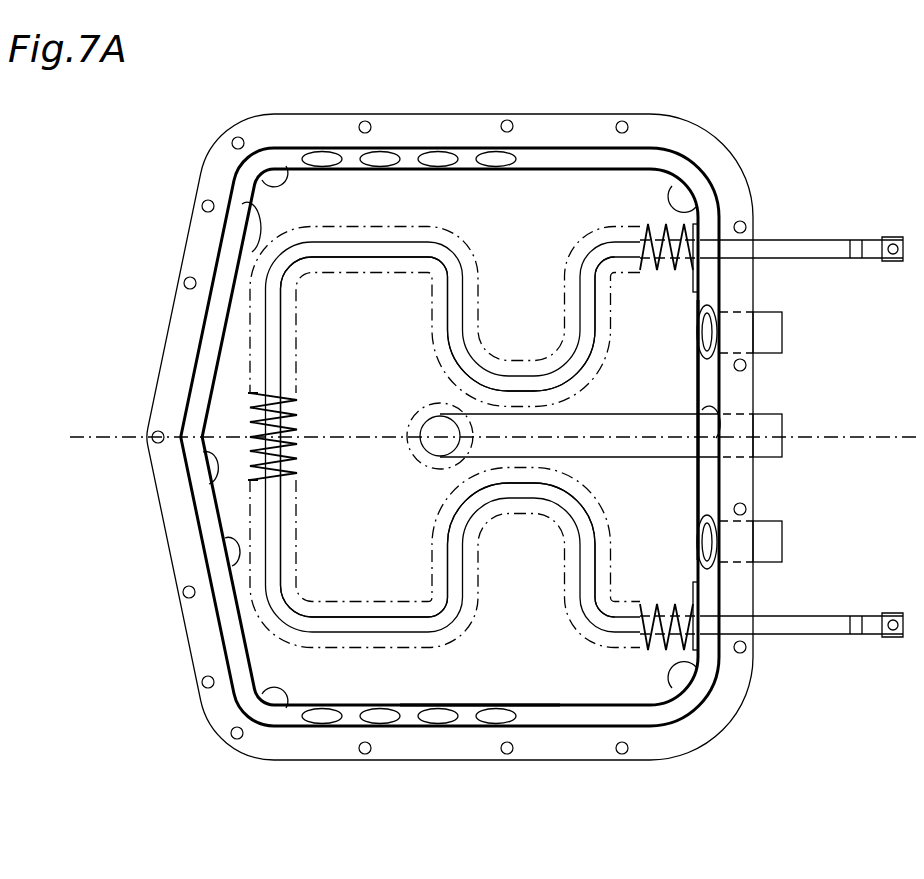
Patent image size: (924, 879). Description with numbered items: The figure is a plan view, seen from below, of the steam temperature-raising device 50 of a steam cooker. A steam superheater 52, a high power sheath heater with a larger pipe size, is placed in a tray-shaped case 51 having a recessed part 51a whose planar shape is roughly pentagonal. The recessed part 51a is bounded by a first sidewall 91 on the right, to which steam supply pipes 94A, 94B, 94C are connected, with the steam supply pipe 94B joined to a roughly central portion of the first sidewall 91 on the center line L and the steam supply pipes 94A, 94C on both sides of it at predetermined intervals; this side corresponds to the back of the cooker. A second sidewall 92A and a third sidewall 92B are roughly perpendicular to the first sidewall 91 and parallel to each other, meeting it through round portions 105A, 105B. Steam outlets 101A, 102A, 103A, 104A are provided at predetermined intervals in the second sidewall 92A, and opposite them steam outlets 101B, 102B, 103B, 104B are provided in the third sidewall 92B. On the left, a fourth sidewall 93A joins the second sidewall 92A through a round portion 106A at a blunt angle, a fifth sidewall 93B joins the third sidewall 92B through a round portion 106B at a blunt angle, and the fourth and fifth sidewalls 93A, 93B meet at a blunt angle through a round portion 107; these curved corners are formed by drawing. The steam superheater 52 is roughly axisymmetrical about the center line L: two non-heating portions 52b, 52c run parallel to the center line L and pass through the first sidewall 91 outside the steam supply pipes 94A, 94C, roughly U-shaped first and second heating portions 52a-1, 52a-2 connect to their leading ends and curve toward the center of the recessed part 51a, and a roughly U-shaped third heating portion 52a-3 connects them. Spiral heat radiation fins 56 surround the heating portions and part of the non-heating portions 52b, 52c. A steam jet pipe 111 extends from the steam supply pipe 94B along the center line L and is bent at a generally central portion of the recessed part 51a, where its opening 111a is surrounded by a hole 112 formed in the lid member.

The steam temperature-raising device 50 is at (489, 403).
The tray-shaped case 51 is at (577, 114).
The recessed part 51a is at (613, 200).
The steam superheater 52 is at (273, 598).
The first heating portion 52a-1 is at (519, 388).
The second heating portion 52a-2 is at (519, 497).
The third heating portion 52a-3 is at (274, 350).
The first non-heating portion 52b is at (666, 272).
The second non-heating portion 52c is at (666, 602).
The spiral heat radiation fins 56 is at (251, 437).
The first sidewall 91 is at (695, 483).
The second sidewall 92A is at (530, 169).
The third sidewall 92B is at (480, 705).
The fourth sidewall 93A is at (255, 223).
The fifth sidewall 93B is at (233, 573).
The steam supply pipe 94A is at (785, 335).
The steam supply pipe 94B is at (775, 428).
The steam supply pipe 94C is at (785, 545).
The steam outlet 101A is at (322, 162).
The steam outlet 102A is at (380, 162).
The steam outlet 103A is at (438, 162).
The steam outlet 104A is at (496, 162).
The steam outlet 101B is at (320, 718).
The steam outlet 102B is at (380, 718).
The steam outlet 103B is at (438, 718).
The steam outlet 104B is at (496, 718).
The round portion 105A is at (703, 195).
The round portion 105B is at (682, 708).
The round portion 106A is at (270, 160).
The round portion 106B is at (252, 684).
The round portion 107 is at (206, 478).
The steam jet pipe 111 is at (630, 414).
The opening 111a is at (437, 458).
The hole 112 is at (410, 447).
The center line L is at (90, 437).